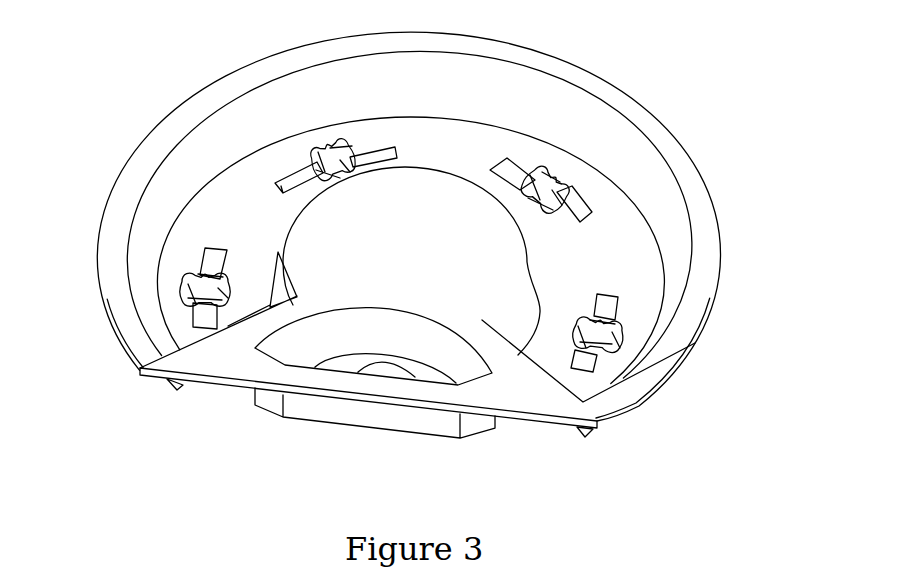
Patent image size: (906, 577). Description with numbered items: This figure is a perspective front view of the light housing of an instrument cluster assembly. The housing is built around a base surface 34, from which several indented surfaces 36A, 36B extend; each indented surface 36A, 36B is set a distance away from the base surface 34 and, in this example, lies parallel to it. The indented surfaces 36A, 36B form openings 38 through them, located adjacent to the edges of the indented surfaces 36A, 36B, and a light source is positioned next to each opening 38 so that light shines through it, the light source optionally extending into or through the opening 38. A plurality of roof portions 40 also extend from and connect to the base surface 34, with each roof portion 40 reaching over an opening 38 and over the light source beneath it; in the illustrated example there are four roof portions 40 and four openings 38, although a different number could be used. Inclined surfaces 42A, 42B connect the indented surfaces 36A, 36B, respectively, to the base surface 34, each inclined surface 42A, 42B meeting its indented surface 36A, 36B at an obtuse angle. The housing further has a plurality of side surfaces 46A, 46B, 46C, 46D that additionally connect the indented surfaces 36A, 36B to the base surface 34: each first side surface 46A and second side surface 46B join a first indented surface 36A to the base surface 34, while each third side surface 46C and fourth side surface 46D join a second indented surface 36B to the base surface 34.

The base surface 34 is at (633, 284).
The first indented surface 36A is at (523, 175).
The second indented surface 36B is at (367, 148).
The opening 38 is at (190, 311).
The roof portion 40 is at (330, 147).
The inclined surface 42A is at (283, 193).
The inclined surface 42B is at (396, 152).
The first side surface 46A is at (297, 158).
The second side surface 46B is at (287, 173).
The third side surface 46C is at (357, 153).
The fourth side surface 46D is at (218, 246).